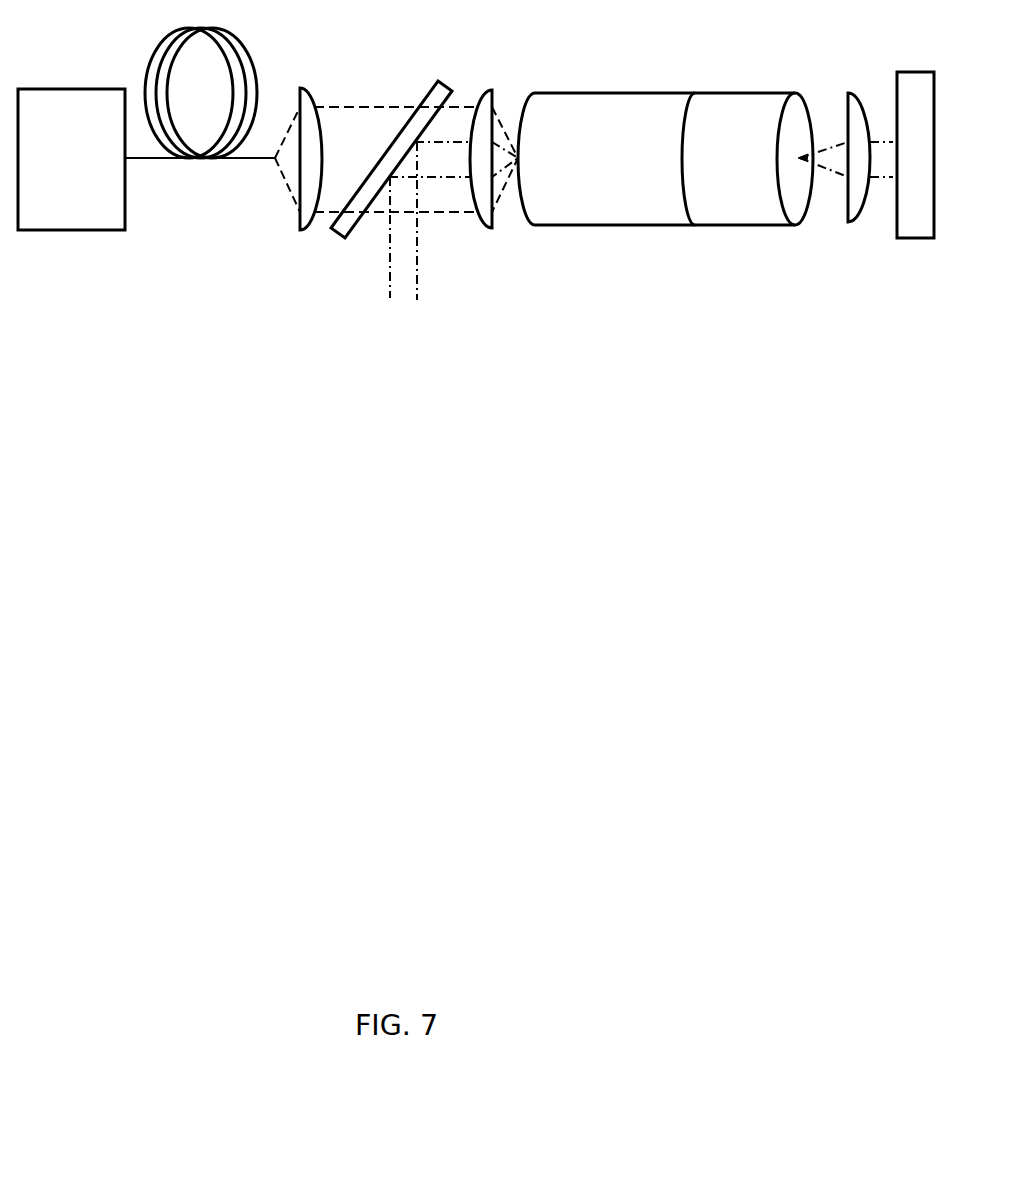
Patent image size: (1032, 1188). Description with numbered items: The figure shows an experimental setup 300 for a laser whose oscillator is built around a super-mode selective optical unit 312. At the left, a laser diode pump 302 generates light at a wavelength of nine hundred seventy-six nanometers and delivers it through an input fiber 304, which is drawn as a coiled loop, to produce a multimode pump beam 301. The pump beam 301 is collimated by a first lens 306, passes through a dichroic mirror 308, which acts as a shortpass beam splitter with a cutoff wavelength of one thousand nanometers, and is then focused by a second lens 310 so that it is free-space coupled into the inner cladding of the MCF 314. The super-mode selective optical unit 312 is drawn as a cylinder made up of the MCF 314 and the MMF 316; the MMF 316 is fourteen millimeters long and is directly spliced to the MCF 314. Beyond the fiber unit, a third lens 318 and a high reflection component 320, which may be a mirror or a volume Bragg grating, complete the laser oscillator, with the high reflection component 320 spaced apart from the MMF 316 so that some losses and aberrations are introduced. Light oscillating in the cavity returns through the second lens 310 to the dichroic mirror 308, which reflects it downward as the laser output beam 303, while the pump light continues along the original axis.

The experimental setup 300 is at (330, 495).
The pump beam 301 is at (375, 105).
The laser diode pump 302 is at (90, 170).
The laser output beam 303 is at (418, 249).
The input fiber 304 is at (218, 141).
The first lens 306 is at (298, 219).
The dichroic mirror 308 is at (362, 220).
The second lens 310 is at (476, 106).
The super-mode selective optical unit 312 is at (665, 209).
The MCF 314 is at (590, 215).
The MMF 316 is at (773, 215).
The third lens 318 is at (858, 217).
The high reflection component 320 is at (920, 240).